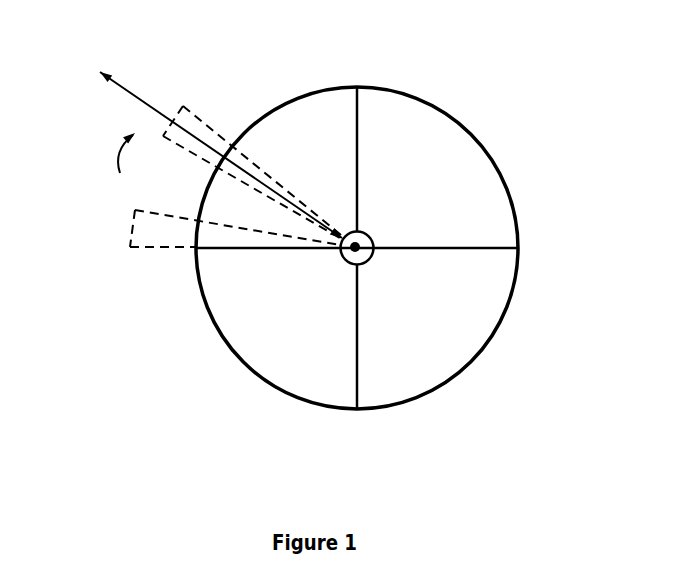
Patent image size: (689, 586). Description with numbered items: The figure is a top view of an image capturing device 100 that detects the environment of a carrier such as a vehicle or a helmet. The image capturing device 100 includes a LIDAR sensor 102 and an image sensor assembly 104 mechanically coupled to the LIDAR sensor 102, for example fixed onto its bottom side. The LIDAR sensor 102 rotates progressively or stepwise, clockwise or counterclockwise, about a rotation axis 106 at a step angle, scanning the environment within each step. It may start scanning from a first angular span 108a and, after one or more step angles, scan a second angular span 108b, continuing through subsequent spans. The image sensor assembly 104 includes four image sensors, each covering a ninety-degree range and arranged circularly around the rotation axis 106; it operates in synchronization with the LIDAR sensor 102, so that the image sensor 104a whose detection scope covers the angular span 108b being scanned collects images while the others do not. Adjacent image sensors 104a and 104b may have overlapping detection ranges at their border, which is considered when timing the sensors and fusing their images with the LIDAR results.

The image capturing device 100 is at (436, 71).
The LIDAR sensor 102 is at (367, 261).
The image sensor assembly 104 is at (383, 236).
The image sensor 104a is at (328, 118).
The image sensor 104b is at (452, 138).
The rotation axis 106 is at (357, 247).
The first angular span 108a is at (130, 232).
The second angular span 108b is at (182, 107).